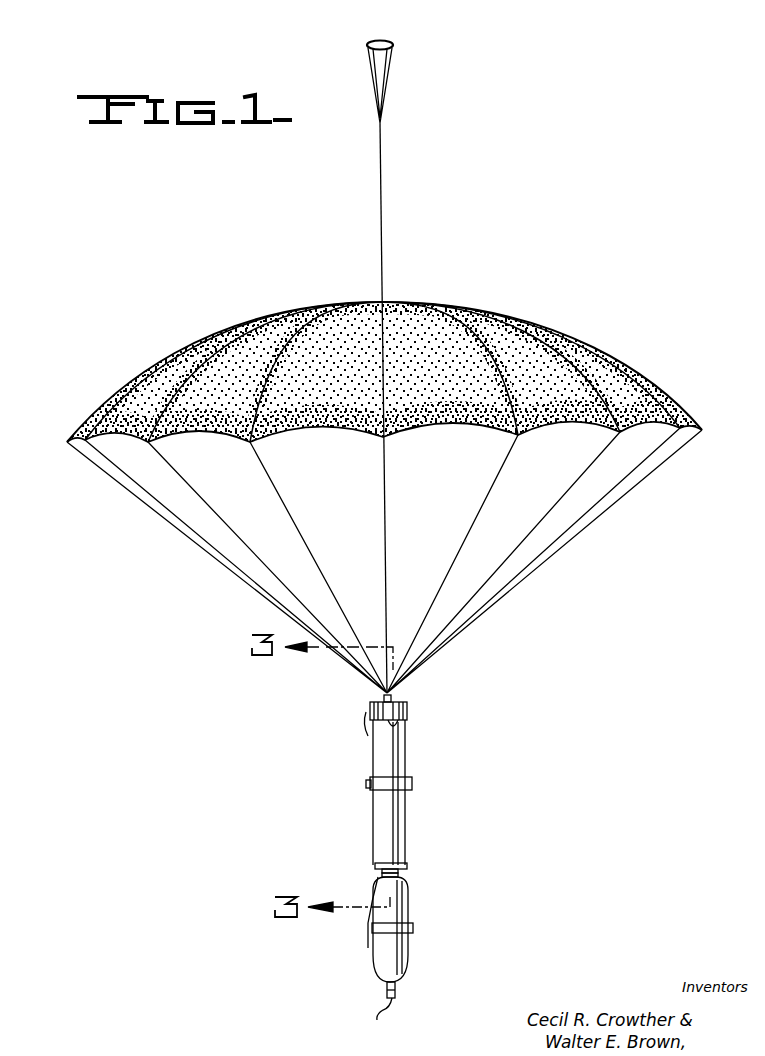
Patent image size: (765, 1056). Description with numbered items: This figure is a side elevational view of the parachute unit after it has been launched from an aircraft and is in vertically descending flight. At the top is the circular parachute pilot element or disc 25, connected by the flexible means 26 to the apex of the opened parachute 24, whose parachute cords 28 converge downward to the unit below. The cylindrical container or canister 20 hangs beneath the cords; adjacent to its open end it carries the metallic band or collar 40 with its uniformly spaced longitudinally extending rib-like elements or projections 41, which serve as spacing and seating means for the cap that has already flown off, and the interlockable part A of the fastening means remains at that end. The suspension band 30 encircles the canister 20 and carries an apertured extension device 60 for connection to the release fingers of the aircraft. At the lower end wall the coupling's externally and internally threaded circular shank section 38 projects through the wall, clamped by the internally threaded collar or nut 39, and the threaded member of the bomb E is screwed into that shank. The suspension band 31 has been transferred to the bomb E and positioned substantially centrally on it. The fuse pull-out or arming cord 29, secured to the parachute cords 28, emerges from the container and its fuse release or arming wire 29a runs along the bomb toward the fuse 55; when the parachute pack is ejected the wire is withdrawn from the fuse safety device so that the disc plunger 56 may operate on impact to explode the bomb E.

The parachute pilot element or disc 25 is at (393, 43).
The flexible means 26 is at (382, 187).
The parachute 24 is at (560, 330).
The parachute cords 28 is at (420, 668).
The rib-like elements or projections 41 is at (405, 708).
The metallic band or collar 40 is at (393, 727).
The interlockable part A is at (363, 728).
The suspension band 30 is at (412, 778).
The apertured extension device 60 is at (366, 783).
The cylindrical container or canister 20 is at (407, 825).
The collar or nut 39 is at (403, 872).
The threaded circular shank section 38 is at (403, 876).
The fuse pull-out or arming cord 29 is at (377, 875).
The fuse release or arming wire 29a is at (368, 935).
The bomb E is at (407, 953).
The suspension band 31 is at (413, 925).
The fuse 55 is at (387, 990).
The disc plunger 56 is at (371, 1016).